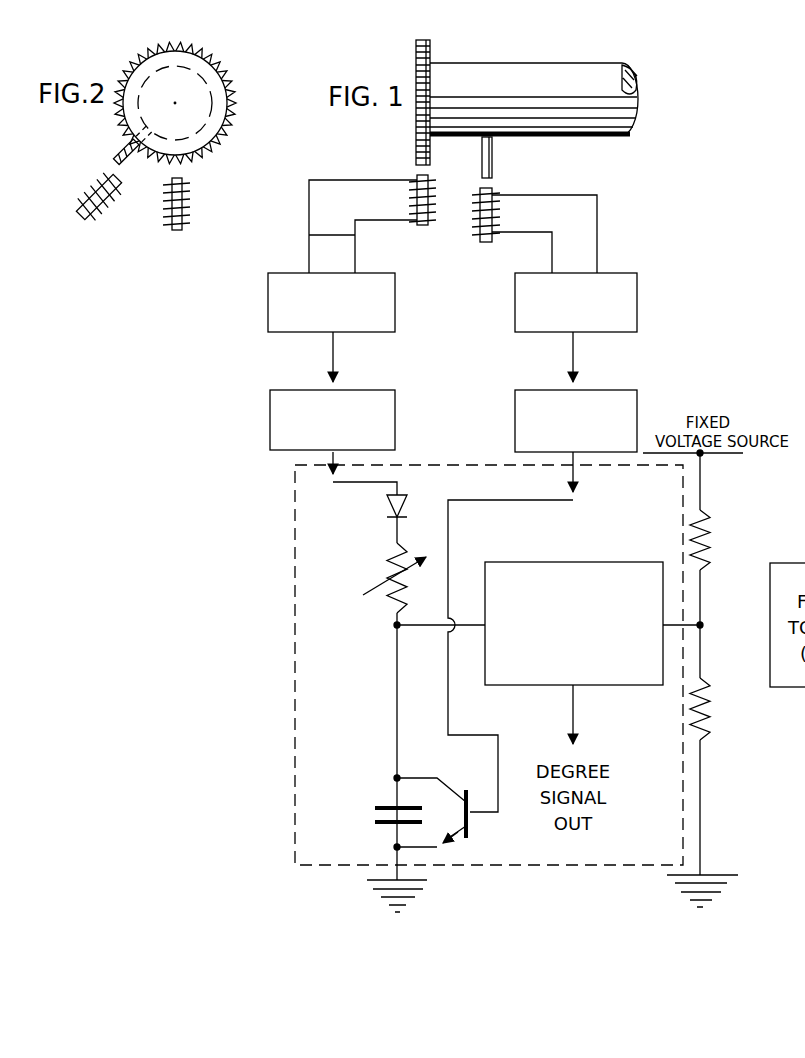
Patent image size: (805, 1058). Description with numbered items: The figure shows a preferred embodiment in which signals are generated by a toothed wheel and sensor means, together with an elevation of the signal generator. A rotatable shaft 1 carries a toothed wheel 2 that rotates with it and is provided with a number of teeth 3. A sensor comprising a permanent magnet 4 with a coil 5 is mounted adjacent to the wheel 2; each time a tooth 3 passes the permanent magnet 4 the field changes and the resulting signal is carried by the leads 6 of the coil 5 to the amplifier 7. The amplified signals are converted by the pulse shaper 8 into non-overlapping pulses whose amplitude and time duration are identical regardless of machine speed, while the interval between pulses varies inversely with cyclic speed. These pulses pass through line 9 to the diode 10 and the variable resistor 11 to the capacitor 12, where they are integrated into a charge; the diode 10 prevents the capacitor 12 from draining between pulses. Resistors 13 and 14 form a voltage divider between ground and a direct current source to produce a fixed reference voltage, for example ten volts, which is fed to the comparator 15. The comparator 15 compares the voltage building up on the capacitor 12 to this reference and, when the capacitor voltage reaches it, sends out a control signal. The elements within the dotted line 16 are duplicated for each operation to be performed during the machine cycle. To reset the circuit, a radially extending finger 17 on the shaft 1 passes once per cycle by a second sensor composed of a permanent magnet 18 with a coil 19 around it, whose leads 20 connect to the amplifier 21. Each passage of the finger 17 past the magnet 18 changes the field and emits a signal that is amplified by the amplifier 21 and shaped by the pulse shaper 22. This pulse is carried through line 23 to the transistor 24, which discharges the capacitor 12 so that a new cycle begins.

In FIG. 2, the rotatable shaft 1 is at (207, 118).
In FIG. 1, the rotatable shaft 1 is at (577, 73).
In FIG. 2, the toothed wheel 2 is at (227, 83).
In FIG. 1, the toothed wheel 2 is at (430, 45).
In FIG. 2, the teeth 3 is at (222, 123).
In FIG. 1, the teeth 3 is at (416, 71).
In FIG. 2, the permanent magnet 4 is at (183, 230).
In FIG. 1, the permanent magnet 4 is at (422, 226).
In FIG. 2, the coil 5 is at (185, 200).
In FIG. 1, the coil 5 is at (410, 197).
In FIG. 1, the leads 6 is at (309, 232).
In FIG. 1, the amplifier 7 is at (268, 305).
In FIG. 1, the pulse shaper 8 is at (270, 415).
In FIG. 1, the line 9 is at (353, 483).
In FIG. 1, the diode 10 is at (377, 508).
In FIG. 1, the variable resistor 11 is at (375, 565).
In FIG. 1, the capacitor 12 is at (365, 800).
In FIG. 1, the resistor 13 is at (708, 530).
In FIG. 1, the resistor 14 is at (712, 712).
In FIG. 1, the comparator 15 is at (588, 560).
In FIG. 1, the dotted line 16 is at (295, 627).
In FIG. 2, the radially extending finger 17 is at (120, 157).
In FIG. 1, the radially extending finger 17 is at (492, 160).
In FIG. 2, the permanent magnet 18 is at (93, 224).
In FIG. 1, the permanent magnet 18 is at (484, 246).
In FIG. 2, the coil 19 is at (105, 215).
In FIG. 1, the coil 19 is at (496, 208).
In FIG. 1, the leads 20 is at (554, 260).
In FIG. 1, the amplifier 21 is at (637, 288).
In FIG. 1, the pulse shaper 22 is at (628, 398).
In FIG. 1, the line 23 is at (485, 502).
In FIG. 1, the transistor 24 is at (466, 842).